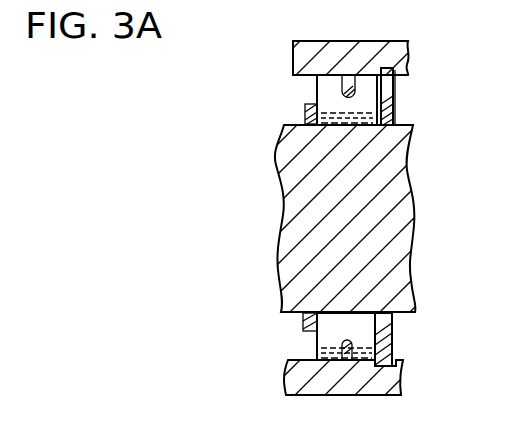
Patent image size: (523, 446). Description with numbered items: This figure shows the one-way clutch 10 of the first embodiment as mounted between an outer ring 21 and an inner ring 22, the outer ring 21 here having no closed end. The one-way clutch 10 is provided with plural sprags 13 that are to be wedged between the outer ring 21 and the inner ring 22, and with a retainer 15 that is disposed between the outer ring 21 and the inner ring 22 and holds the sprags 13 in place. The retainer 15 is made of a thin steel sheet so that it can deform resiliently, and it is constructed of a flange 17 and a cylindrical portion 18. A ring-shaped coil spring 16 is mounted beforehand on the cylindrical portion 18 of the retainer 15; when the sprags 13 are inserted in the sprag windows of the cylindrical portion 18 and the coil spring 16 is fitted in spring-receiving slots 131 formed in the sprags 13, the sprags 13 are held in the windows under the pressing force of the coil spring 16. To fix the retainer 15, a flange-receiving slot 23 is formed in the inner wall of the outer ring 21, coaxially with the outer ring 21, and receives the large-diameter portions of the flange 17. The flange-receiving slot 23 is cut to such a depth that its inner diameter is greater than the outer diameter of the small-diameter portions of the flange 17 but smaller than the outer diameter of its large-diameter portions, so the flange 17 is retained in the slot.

The one-way clutch 10 is at (282, 361).
The sprags 13 is at (330, 93).
The retainer 15 is at (405, 100).
The coil spring 16 is at (347, 356).
The flange 17 is at (385, 330).
The cylindrical portion 18 is at (305, 325).
The outer ring 21 is at (357, 47).
The inner ring 22 is at (298, 168).
The flange-receiving slot 23 is at (398, 362).
The spring-receiving slots 131 is at (390, 50).